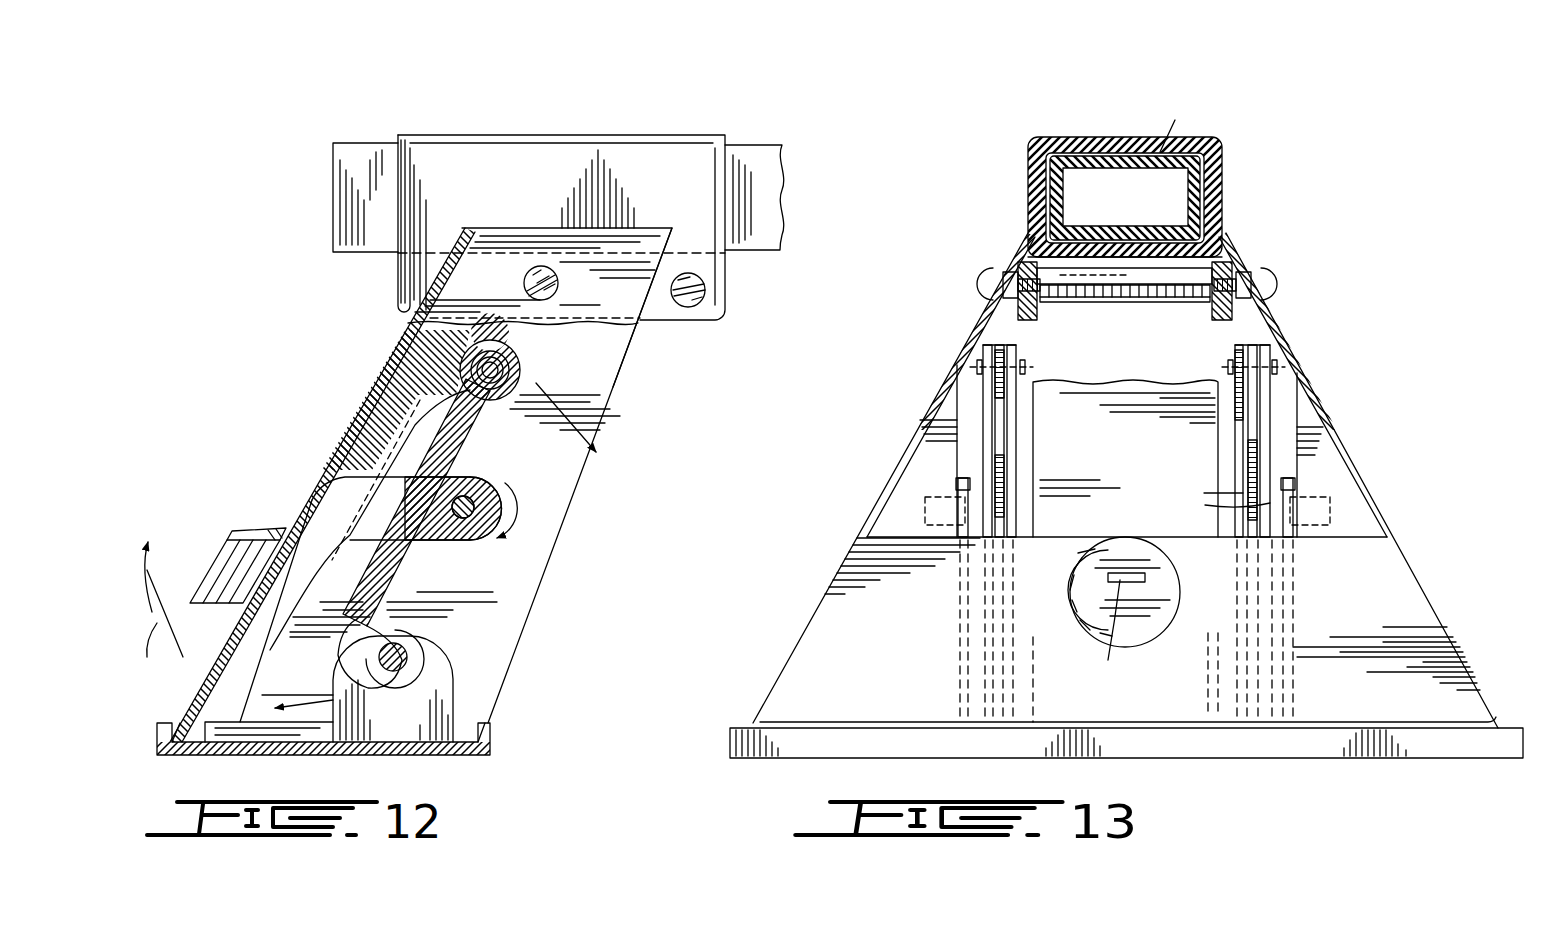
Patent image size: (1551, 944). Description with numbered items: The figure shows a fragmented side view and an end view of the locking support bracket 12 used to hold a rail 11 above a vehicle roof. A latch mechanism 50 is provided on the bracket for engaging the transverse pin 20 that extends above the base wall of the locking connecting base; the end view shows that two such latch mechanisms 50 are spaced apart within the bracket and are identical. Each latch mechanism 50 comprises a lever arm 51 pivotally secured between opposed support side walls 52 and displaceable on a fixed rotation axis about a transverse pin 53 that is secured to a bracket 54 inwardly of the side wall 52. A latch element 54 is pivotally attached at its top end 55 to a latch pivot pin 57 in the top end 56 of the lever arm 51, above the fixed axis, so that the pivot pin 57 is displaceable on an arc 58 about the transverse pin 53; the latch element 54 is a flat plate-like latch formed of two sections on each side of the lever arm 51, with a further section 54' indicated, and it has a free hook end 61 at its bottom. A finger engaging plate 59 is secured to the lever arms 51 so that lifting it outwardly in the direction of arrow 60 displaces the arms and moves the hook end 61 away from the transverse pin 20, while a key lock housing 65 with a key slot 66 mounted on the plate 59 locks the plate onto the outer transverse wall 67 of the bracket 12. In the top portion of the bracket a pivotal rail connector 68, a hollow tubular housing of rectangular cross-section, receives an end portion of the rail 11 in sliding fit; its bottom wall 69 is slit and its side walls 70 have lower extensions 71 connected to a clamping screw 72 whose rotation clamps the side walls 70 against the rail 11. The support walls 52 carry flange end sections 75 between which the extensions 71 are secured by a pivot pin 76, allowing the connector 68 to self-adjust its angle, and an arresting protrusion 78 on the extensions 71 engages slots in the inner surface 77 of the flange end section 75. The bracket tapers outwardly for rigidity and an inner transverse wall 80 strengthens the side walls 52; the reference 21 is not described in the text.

In FIG. 12, the rail 11 is at (781, 150).
In FIG. 13, the rail 11 is at (1176, 122).
In FIG. 12, the locking support bracket 12 is at (352, 406).
In FIG. 13, the locking support bracket 12 is at (1294, 354).
In FIG. 12, the transverse pin 20 is at (405, 637).
In FIG. 12, the roller support block 21 is at (440, 742).
In FIG. 12, the latch mechanism 50 is at (478, 538).
In FIG. 13, the latch mechanism 50 is at (1018, 440).
In FIG. 12, the lever arm 51 is at (370, 437).
In FIG. 13, the lever arm 51 is at (1250, 440).
In FIG. 12, the support side wall 52 is at (628, 324).
In FIG. 12, the transverse pin 53 is at (465, 522).
In FIG. 13, the transverse pin 53 is at (975, 503).
In FIG. 12, the latch element 54 is at (393, 618).
In FIG. 13, the latch element 54 is at (1222, 495).
In FIG. 13, the lever plate (alternate position) 54' is at (1122, 506).
In FIG. 12, the top end of latch element 55 is at (520, 370).
In FIG. 12, the top end of lever arm 56 is at (428, 340).
In FIG. 12, the latch pivot pin 57 is at (489, 378).
In FIG. 12, the arc 58 is at (600, 440).
In FIG. 13, the finger engaging plate 59 is at (1378, 597).
In FIG. 12, the arrow 60 is at (155, 609).
In FIG. 12, the free hook end 61 is at (356, 742).
In FIG. 12, the key lock housing 65 is at (228, 566).
In FIG. 13, the key lock housing 65 is at (1137, 597).
In FIG. 13, the key slot 66 is at (1092, 631).
In FIG. 13, the outer transverse wall 67 is at (1058, 518).
In FIG. 12, the pivotal rail connector 68 is at (658, 158).
In FIG. 13, the pivotal rail connector 68 is at (1034, 157).
In FIG. 13, the bottom wall 69 is at (1160, 266).
In FIG. 13, the side wall 70 is at (1030, 188).
In FIG. 13, the lower extension 71 is at (1216, 304).
In FIG. 12, the clamping screw 72 is at (706, 291).
In FIG. 13, the clamping screw 72 is at (1116, 300).
In FIG. 13, the flange end section 75 is at (1040, 306).
In FIG. 12, the pivot pin 76 is at (523, 282).
In FIG. 13, the pivot pin 76 is at (1004, 281).
In FIG. 13, the inner surface 77 is at (1040, 323).
In FIG. 13, the arresting protrusion 78 is at (1025, 252).
In FIG. 12, the inner transverse wall 80 is at (527, 627).